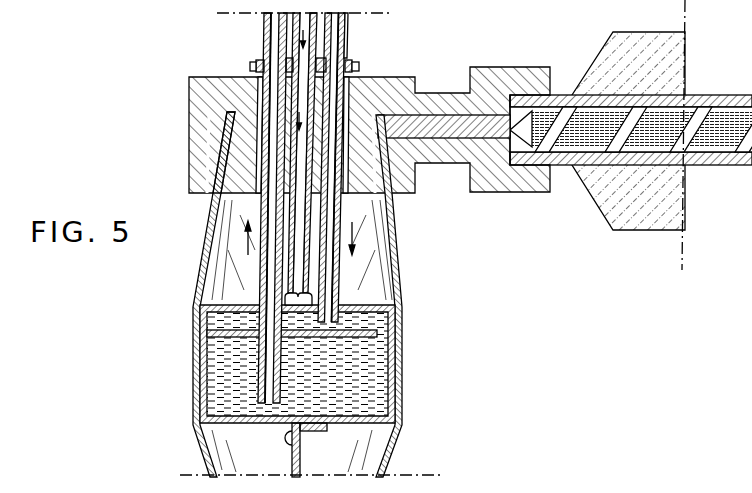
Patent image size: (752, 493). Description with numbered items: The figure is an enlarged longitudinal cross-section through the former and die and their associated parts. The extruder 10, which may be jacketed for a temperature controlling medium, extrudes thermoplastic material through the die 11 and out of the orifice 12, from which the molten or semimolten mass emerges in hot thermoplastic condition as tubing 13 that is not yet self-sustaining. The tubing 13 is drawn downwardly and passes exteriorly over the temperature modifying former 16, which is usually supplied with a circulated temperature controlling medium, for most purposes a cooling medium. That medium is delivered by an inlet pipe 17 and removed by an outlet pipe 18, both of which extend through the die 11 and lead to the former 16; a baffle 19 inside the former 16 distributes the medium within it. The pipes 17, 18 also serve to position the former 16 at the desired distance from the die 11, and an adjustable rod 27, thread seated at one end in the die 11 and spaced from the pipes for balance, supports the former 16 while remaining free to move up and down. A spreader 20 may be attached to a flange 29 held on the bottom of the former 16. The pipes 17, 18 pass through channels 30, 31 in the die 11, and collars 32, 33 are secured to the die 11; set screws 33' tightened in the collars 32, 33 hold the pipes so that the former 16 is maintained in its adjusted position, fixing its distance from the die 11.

The extruder 10 is at (642, 230).
The die 11 is at (197, 118).
The orifice 12 is at (215, 178).
The tubing 13 is at (400, 268).
The former 16 is at (396, 353).
The inlet pipe 17 is at (331, 272).
The outlet pipe 18 is at (268, 270).
The baffle 19 is at (201, 344).
The spreader 20 is at (292, 458).
The adjustable rod 27 is at (302, 284).
The flange 29 is at (320, 432).
The channel 30 is at (250, 83).
The channel 31 is at (348, 93).
The collar 32 is at (344, 58).
The collar 33 is at (295, 43).
The set screw 33' is at (306, 52).